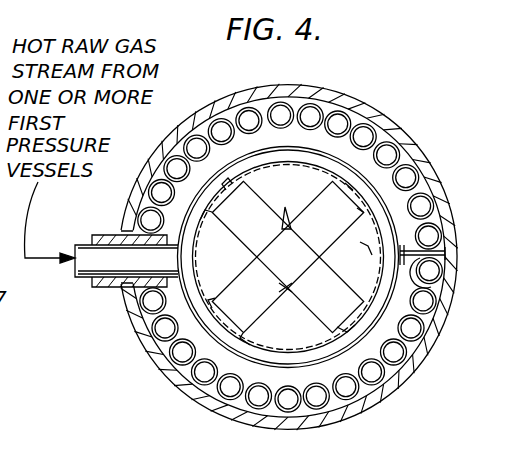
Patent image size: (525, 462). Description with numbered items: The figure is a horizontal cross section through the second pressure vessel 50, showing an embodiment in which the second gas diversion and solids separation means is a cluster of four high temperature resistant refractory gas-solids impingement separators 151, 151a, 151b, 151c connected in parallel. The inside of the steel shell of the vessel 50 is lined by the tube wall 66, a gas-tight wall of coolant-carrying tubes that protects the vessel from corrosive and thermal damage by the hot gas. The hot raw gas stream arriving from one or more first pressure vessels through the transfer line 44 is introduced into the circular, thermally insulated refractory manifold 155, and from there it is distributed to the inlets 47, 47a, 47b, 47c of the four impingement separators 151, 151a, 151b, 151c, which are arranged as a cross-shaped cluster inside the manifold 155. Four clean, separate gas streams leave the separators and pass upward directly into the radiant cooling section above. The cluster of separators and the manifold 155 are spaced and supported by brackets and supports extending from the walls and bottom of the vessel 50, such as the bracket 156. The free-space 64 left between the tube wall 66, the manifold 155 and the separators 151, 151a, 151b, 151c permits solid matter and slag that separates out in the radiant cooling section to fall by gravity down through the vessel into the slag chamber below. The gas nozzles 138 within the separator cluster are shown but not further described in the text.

The transfer line 44 is at (78, 242).
The inlet 47 is at (222, 218).
The inlet 47a is at (325, 233).
The inlet 47b is at (313, 297).
The inlet 47c is at (246, 268).
The second pressure vessel 50 is at (300, 86).
The free-space 64 is at (207, 158).
The tube wall 66 is at (348, 126).
The gas nozzle 138 is at (287, 210).
The gas-solids impingement separator 151 is at (277, 222).
The gas-solids impingement separator 151a is at (328, 248).
The gas-solids impingement separator 151b is at (296, 306).
The gas-solids impingement separator 151c is at (252, 276).
The refractory manifold 155 is at (378, 213).
The bracket 156 is at (438, 282).